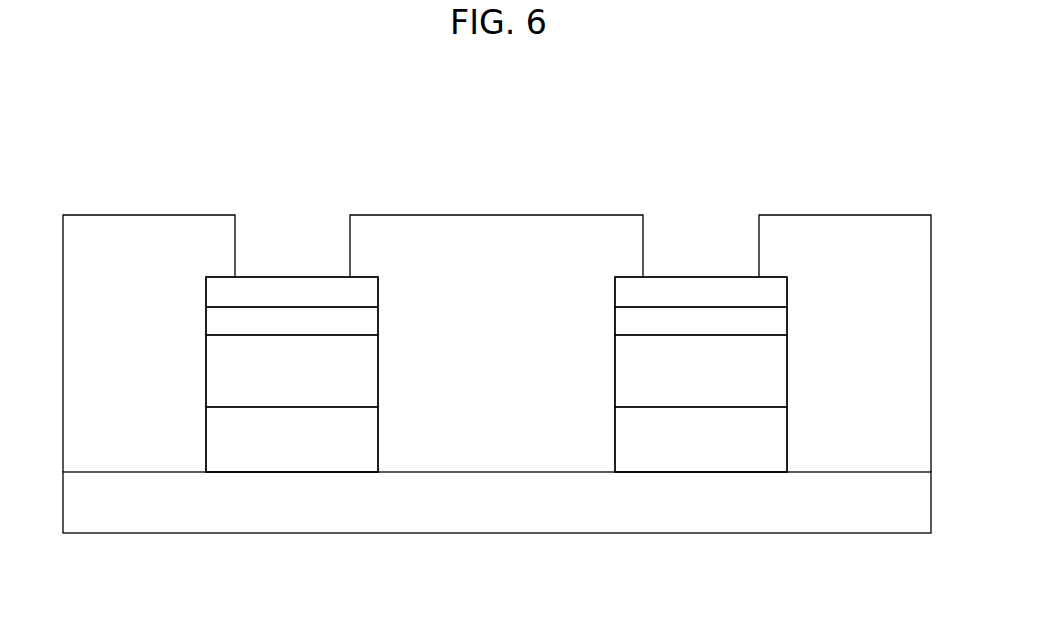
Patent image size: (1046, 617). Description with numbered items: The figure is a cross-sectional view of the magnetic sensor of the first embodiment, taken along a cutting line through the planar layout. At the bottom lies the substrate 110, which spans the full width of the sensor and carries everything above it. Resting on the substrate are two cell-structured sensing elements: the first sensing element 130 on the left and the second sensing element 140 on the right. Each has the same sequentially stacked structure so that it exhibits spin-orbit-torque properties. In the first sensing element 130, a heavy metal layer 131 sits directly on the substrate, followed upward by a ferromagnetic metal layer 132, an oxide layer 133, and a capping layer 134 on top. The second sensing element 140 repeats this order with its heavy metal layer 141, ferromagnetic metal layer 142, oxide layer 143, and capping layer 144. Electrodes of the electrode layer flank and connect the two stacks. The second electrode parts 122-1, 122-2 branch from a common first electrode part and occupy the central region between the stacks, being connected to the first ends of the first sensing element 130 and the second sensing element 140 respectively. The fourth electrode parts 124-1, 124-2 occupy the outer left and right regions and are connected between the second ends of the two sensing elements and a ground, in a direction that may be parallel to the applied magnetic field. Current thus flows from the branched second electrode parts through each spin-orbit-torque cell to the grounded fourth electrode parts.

The substrate 110 is at (853, 515).
The second electrode part 122-1 is at (492, 232).
The second electrode part 122-2 is at (509, 228).
The fourth electrode part 124-1 is at (100, 232).
The fourth electrode part 124-2 is at (867, 232).
The first sensing element 130 is at (255, 359).
The heavy metal layer 131 is at (350, 452).
The ferromagnetic metal layer 132 is at (203, 386).
The oxide layer 133 is at (367, 318).
The capping layer 134 is at (213, 273).
The second sensing element 140 is at (663, 359).
The heavy metal layer 141 is at (755, 452).
The ferromagnetic metal layer 142 is at (607, 386).
The oxide layer 143 is at (777, 318).
The capping layer 144 is at (625, 283).